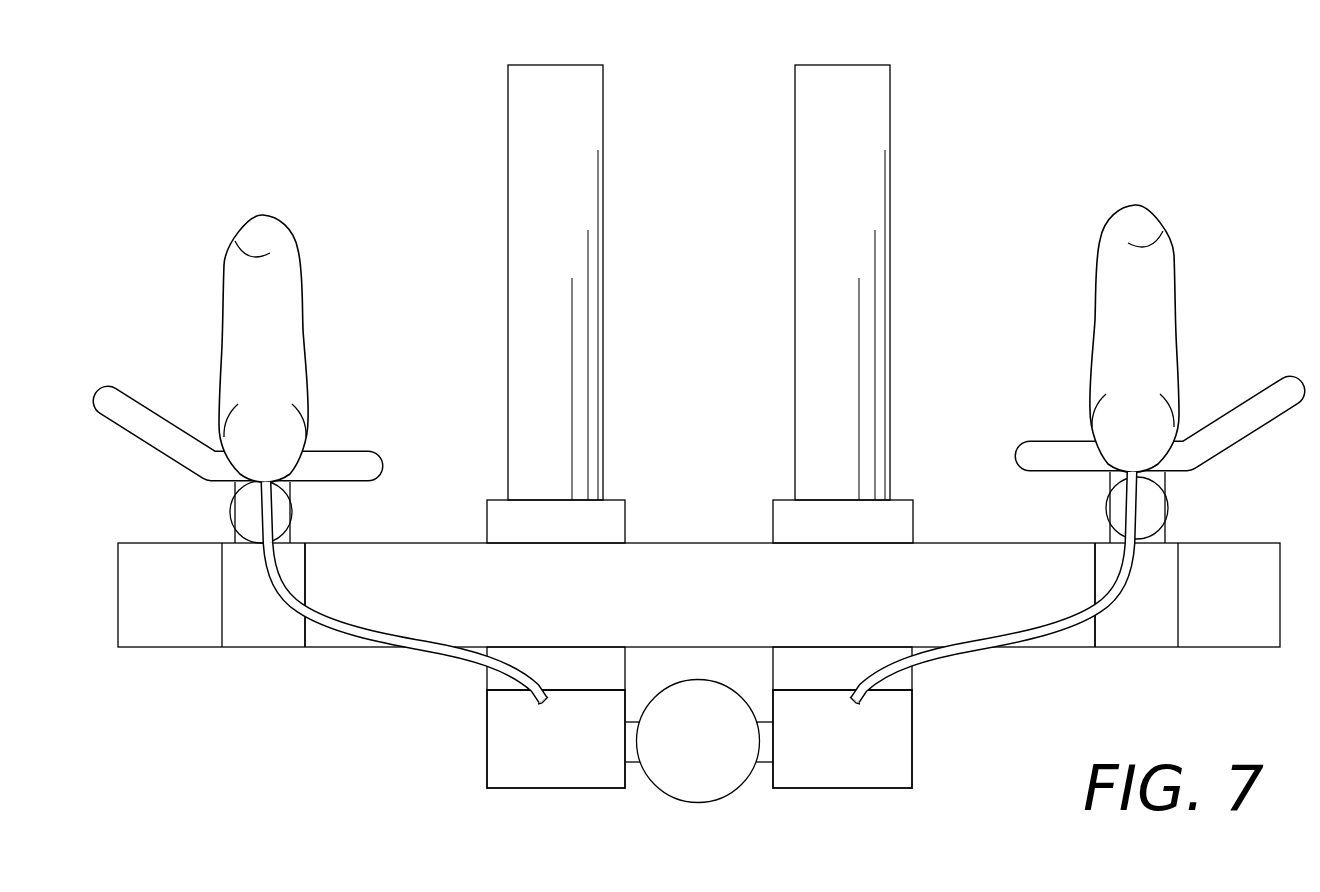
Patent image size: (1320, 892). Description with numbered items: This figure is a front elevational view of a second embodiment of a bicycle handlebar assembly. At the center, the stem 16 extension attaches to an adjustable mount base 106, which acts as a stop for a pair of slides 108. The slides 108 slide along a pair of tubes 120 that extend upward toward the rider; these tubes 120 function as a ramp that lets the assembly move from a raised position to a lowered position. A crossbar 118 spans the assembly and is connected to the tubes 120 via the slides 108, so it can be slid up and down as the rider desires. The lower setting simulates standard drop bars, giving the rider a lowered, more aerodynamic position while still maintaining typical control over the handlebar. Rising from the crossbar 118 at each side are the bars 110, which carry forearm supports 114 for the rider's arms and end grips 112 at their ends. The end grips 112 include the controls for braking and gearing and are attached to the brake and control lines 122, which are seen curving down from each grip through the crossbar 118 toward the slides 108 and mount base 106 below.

The stem 16 is at (722, 800).
The adjustable mount base 106 is at (913, 745).
The slides 108 is at (913, 677).
The bars 110 is at (282, 500).
The end grips 112 is at (302, 325).
The forearm supports 114 is at (347, 448).
The crossbar 118 is at (1218, 648).
The tubes 120 is at (795, 84).
The brake and control lines 122 is at (1007, 637).